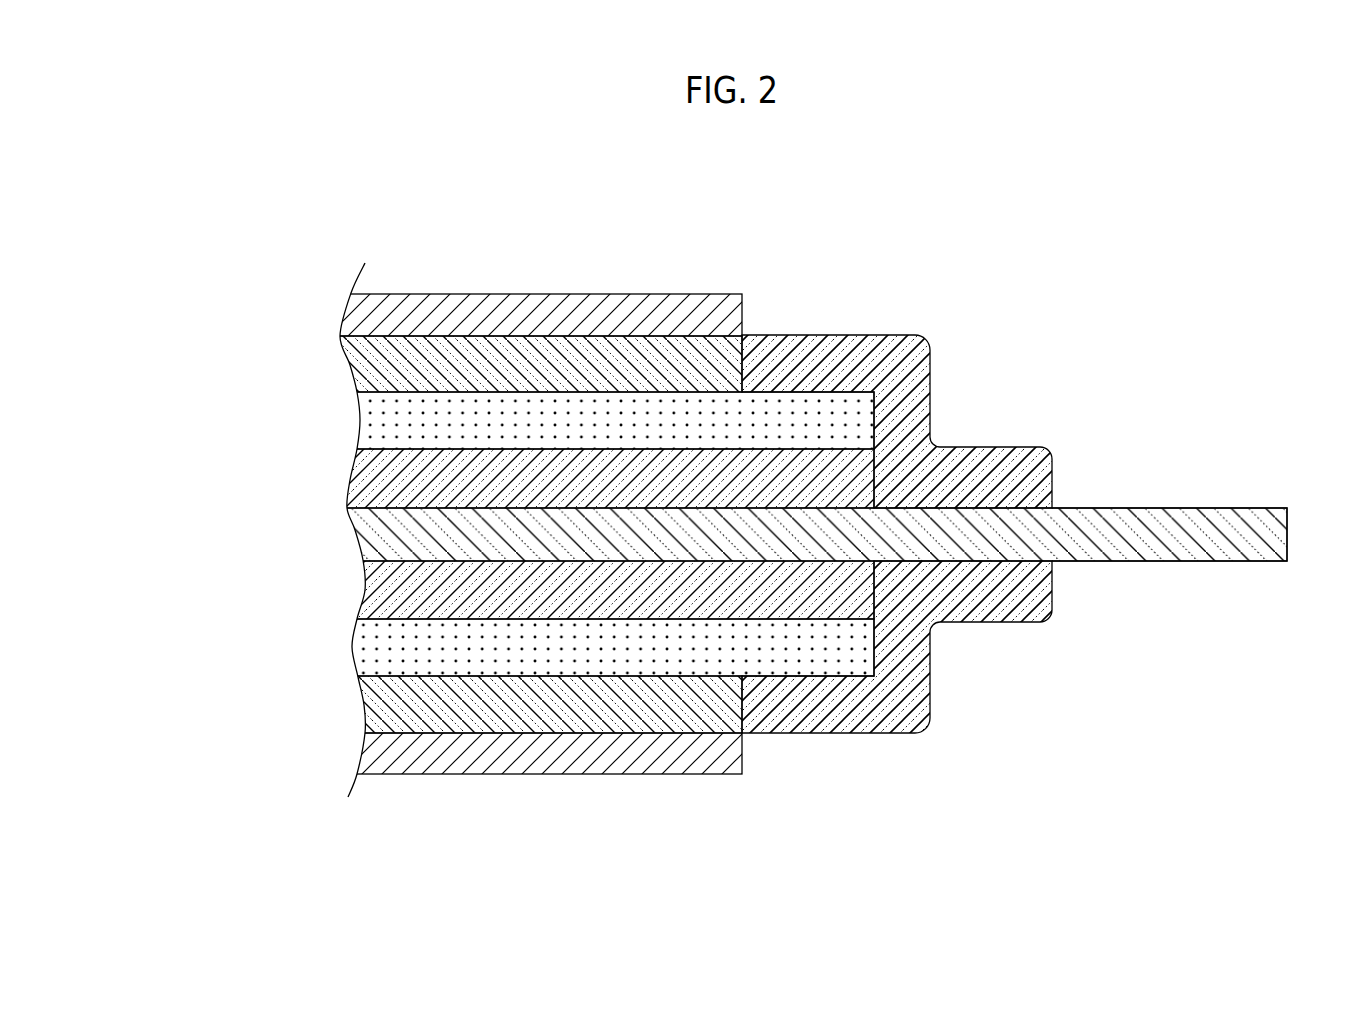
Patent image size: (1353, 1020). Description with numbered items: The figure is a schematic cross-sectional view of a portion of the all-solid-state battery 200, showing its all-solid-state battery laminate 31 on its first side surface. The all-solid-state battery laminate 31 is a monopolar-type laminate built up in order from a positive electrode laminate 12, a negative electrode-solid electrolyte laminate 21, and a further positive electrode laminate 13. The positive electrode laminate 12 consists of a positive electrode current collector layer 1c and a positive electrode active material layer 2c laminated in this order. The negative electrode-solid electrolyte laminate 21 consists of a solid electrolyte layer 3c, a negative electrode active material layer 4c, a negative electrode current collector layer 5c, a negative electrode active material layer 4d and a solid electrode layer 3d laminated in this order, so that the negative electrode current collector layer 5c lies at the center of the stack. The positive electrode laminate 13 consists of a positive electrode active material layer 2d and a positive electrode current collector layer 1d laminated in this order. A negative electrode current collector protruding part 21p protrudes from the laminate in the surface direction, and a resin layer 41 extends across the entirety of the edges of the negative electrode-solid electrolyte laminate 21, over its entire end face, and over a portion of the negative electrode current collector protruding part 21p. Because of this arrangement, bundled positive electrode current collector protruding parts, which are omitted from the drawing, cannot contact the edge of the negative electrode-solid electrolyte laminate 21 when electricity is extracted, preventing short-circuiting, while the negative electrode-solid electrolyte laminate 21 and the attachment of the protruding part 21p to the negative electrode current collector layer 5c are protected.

The all-solid-state battery 200 is at (377, 224).
The all-solid-state battery laminate 31 is at (174, 303).
The positive electrode laminate 12 is at (254, 288).
The positive electrode laminate 13 is at (254, 673).
The negative electrode-solid electrolyte laminate 21 is at (240, 393).
The positive electrode current collector layer 1c is at (348, 314).
The positive electrode active material layer 2c is at (345, 365).
The solid electrolyte layer 3c is at (355, 420).
The negative electrode active material layer 4c is at (352, 480).
The negative electrode current collector layer 5c is at (353, 535).
The negative electrode active material layer 4d is at (357, 590).
The solid electrode layer 3d is at (352, 648).
The positive electrode active material layer 2d is at (357, 705).
The positive electrode current collector layer 1d is at (350, 752).
The resin layer 41 is at (929, 349).
The negative electrode current collector protruding part 21p is at (1225, 535).